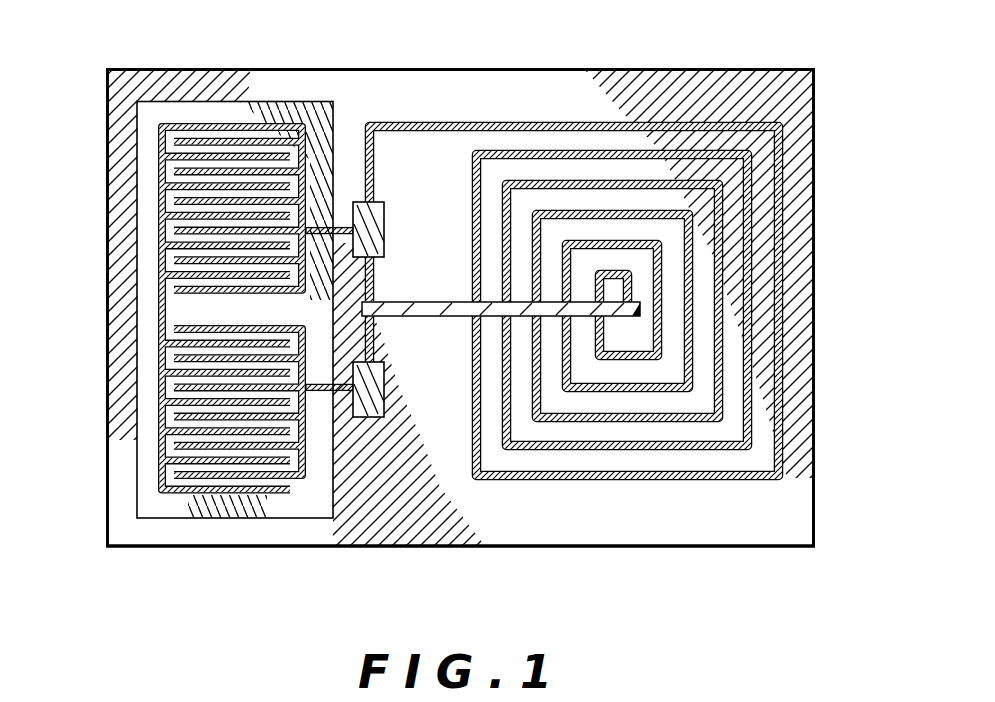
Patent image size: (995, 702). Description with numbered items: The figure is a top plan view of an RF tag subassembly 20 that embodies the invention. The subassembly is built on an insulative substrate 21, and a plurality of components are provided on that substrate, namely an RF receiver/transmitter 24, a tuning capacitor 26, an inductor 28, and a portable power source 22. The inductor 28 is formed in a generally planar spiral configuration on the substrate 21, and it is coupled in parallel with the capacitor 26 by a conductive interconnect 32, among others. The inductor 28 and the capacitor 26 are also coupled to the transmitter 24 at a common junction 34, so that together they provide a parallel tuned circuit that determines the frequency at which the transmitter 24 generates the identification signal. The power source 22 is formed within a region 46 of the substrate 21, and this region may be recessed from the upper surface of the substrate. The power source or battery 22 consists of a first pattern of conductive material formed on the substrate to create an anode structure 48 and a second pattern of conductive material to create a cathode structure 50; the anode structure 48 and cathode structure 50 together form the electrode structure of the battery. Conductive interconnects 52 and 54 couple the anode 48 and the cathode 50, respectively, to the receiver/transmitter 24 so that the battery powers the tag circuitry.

The RF tag subassembly 20 is at (628, 628).
The insulative substrate 21 is at (813, 312).
The portable power source 22 is at (137, 343).
The RF receiver/transmitter 24 is at (372, 418).
The tuning capacitor 26 is at (372, 198).
The inductor 28 is at (781, 480).
The conductive interconnect 32 is at (638, 303).
The common junction 34 is at (374, 318).
The region 46 is at (158, 519).
The anode structure 48 is at (302, 126).
The cathode structure 50 is at (158, 178).
The conductive interconnect 52 is at (339, 222).
The conductive interconnect 54 is at (310, 394).